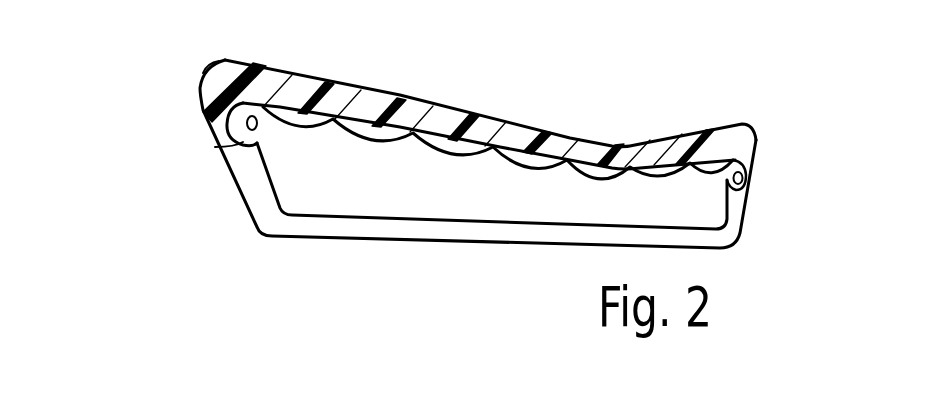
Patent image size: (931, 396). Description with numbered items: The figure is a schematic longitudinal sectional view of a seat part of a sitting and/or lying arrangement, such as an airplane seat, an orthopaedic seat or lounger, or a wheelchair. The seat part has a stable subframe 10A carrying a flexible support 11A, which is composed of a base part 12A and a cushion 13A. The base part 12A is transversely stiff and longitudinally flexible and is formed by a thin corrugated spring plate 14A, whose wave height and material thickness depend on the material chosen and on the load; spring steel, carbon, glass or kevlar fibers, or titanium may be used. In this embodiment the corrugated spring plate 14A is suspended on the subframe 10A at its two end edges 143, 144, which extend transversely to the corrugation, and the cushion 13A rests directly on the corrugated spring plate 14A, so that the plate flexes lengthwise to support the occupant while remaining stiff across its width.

The subframe 10A is at (272, 184).
The flexible support 11A is at (762, 155).
The base part 12A is at (438, 157).
The cushion 13A is at (372, 103).
The corrugated spring plate 14A is at (520, 172).
The end edge 143 is at (244, 142).
The end edge 144 is at (750, 188).